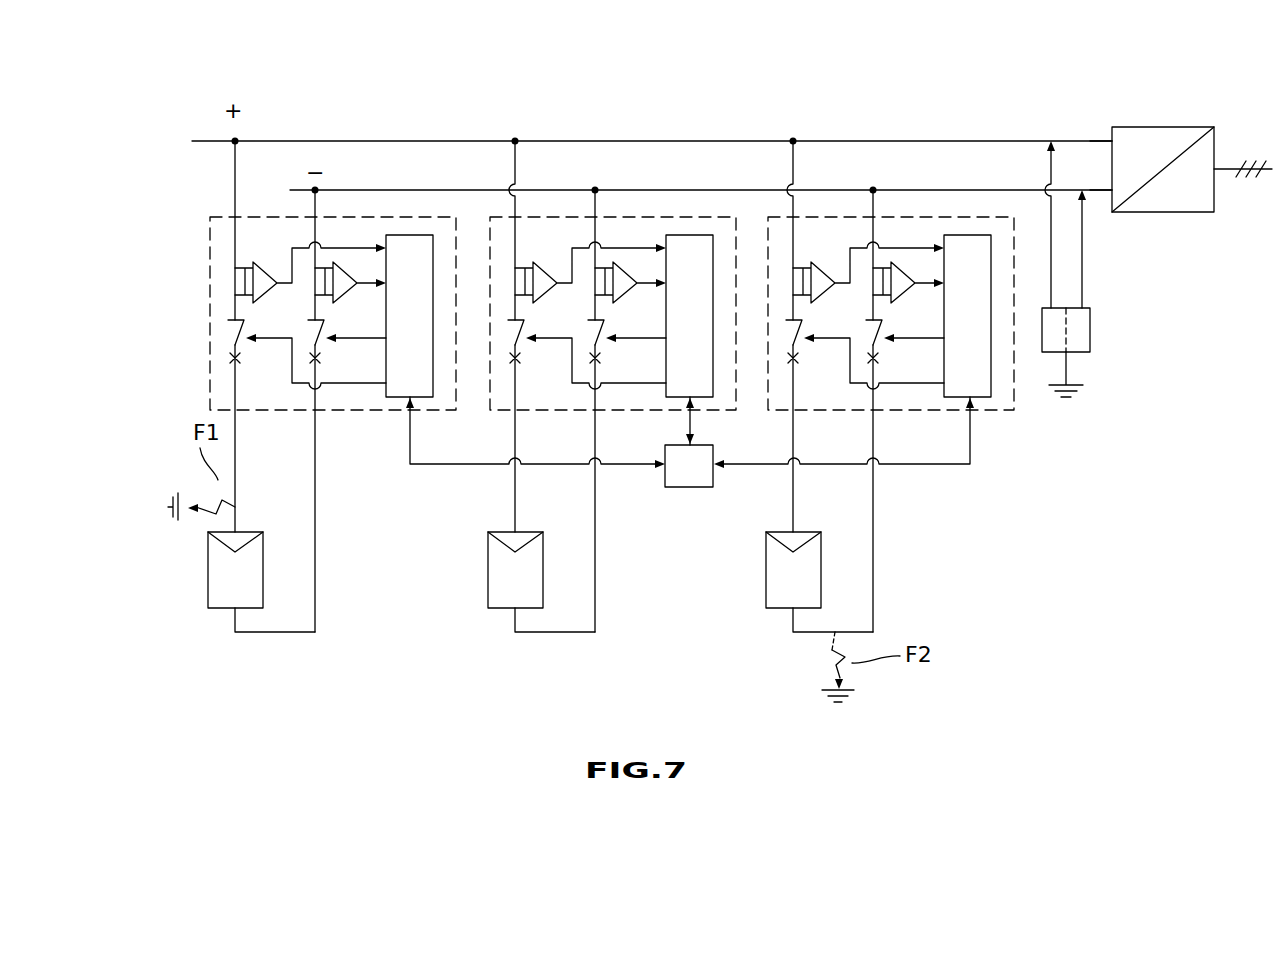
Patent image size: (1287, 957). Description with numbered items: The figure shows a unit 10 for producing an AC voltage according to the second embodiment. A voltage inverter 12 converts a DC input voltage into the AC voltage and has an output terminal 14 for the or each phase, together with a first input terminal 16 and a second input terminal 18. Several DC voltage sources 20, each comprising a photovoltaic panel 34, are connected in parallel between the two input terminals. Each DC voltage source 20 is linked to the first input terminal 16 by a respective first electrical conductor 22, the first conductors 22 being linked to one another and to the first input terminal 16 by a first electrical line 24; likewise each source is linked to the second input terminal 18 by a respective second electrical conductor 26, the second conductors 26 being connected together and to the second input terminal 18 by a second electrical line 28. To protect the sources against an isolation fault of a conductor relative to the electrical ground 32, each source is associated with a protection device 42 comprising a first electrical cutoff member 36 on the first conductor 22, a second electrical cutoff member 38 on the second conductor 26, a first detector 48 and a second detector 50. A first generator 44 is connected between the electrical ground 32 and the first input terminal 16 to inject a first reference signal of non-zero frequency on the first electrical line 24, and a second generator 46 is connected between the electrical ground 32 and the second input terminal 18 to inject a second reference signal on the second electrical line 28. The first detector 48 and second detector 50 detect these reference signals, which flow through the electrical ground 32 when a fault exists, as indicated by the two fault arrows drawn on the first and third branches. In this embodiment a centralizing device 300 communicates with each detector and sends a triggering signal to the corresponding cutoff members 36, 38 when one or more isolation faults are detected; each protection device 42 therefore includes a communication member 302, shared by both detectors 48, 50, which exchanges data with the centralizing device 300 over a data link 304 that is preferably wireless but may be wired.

The unit for producing an AC voltage 10 is at (206, 122).
The voltage inverter 12 is at (1163, 126).
The output terminal 14 is at (1214, 172).
The first input terminal 16 is at (1112, 141).
The second input terminal 18 is at (1112, 212).
The DC voltage source 20 is at (204, 571).
The first electrical conductor 22 is at (233, 173).
The first electrical line 24 is at (570, 141).
The second electrical conductor 26 is at (315, 490).
The second electrical line 28 is at (702, 188).
The electrical ground 32 is at (1066, 402).
The photovoltaic panel 34 is at (223, 612).
The first electrical cutoff member 36 is at (225, 335).
The second electrical cutoff member 38 is at (301, 347).
The protection device 42 is at (458, 235).
The first generator 44 is at (1052, 345).
The second generator 46 is at (1083, 345).
The first detector 48 is at (260, 260).
The second detector 50 is at (344, 263).
The centralizing device 300 is at (682, 487).
The communication member 302 is at (393, 400).
The data link 304 is at (452, 468).